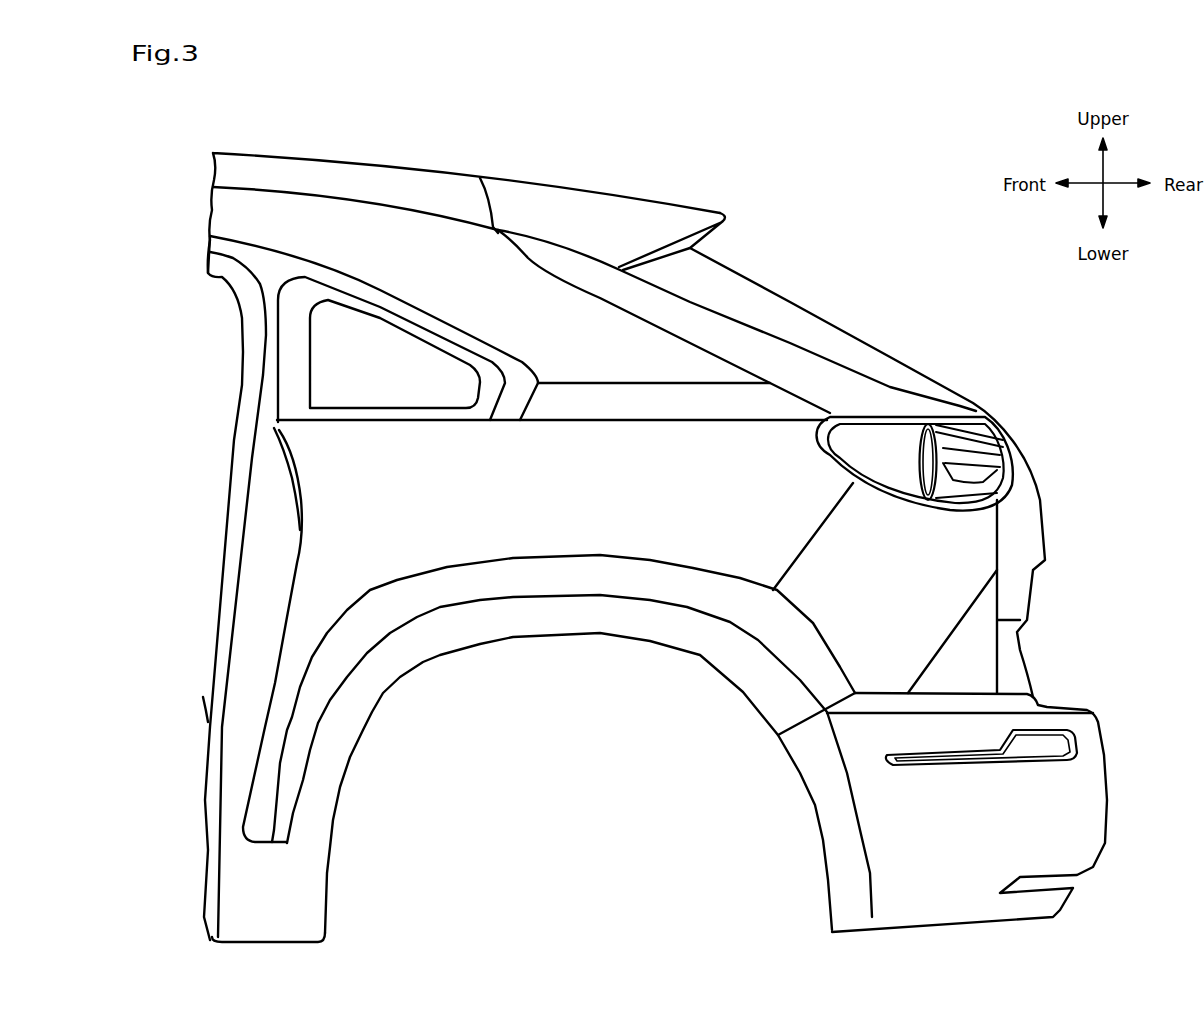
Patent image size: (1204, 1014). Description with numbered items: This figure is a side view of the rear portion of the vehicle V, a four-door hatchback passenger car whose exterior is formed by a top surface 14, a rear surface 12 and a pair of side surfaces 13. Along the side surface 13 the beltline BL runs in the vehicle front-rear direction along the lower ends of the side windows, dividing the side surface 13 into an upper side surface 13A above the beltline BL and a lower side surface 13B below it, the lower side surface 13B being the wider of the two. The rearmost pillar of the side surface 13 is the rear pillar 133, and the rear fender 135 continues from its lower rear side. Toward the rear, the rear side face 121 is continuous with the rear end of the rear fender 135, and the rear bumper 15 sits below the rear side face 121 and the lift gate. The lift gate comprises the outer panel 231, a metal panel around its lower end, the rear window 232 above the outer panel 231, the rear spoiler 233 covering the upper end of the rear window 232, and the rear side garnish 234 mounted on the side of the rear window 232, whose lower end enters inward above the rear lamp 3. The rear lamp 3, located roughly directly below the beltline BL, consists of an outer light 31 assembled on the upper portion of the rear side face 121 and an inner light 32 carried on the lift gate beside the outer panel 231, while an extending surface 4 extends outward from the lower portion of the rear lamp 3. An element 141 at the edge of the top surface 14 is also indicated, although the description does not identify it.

The top surface 14 is at (434, 153).
The roof side rail 141 is at (315, 175).
The rear pillar 133 is at (453, 263).
The rear spoiler 233 is at (601, 208).
The rear side garnish 234 is at (713, 330).
The rear window 232 is at (810, 320).
The vehicle V is at (772, 171).
The rear lamp 3 is at (955, 307).
The outer light 31 is at (892, 408).
The inner light 32 is at (973, 409).
The extending surface 4 is at (953, 500).
The rear surface 12 is at (1098, 493).
The side surface 13 is at (508, 682).
The upper side surface 13A is at (196, 188).
The lower side surface 13B is at (196, 930).
The beltline BL is at (362, 422).
The rear fender 135 is at (685, 512).
The rear side face 121 is at (860, 628).
The outer panel 231 is at (1013, 595).
The rear bumper 15 is at (1093, 812).